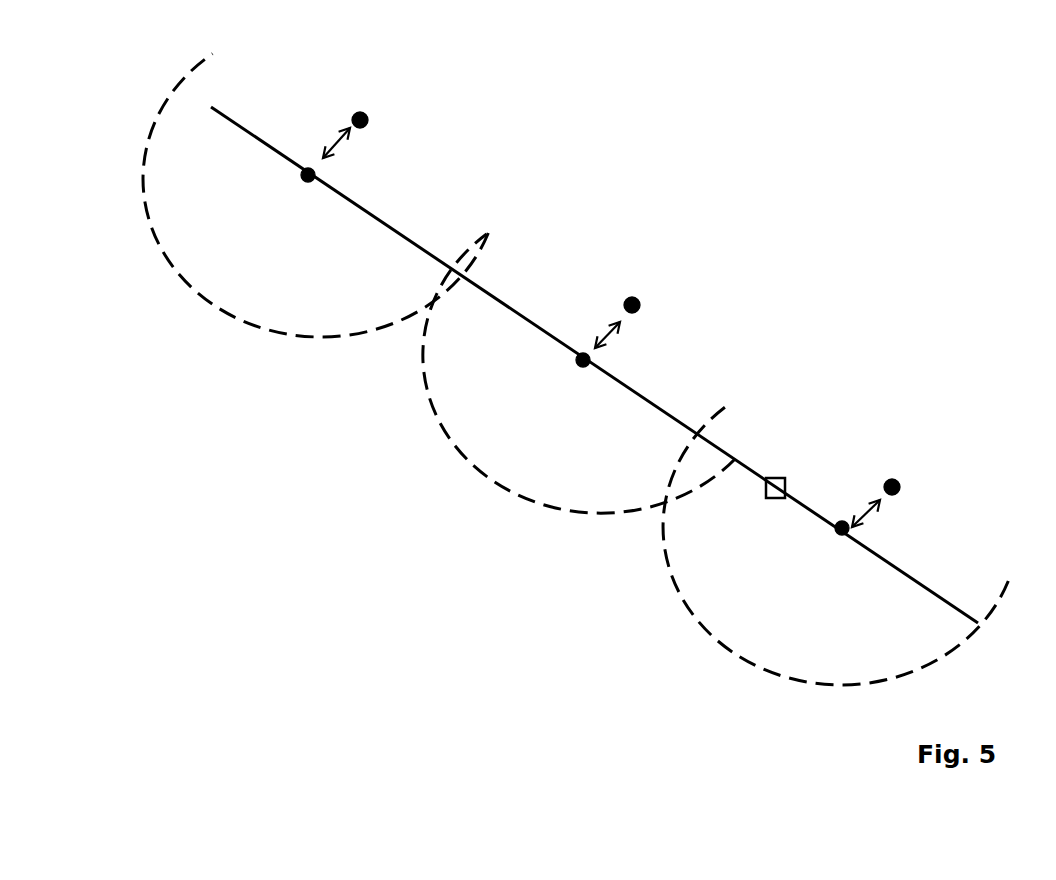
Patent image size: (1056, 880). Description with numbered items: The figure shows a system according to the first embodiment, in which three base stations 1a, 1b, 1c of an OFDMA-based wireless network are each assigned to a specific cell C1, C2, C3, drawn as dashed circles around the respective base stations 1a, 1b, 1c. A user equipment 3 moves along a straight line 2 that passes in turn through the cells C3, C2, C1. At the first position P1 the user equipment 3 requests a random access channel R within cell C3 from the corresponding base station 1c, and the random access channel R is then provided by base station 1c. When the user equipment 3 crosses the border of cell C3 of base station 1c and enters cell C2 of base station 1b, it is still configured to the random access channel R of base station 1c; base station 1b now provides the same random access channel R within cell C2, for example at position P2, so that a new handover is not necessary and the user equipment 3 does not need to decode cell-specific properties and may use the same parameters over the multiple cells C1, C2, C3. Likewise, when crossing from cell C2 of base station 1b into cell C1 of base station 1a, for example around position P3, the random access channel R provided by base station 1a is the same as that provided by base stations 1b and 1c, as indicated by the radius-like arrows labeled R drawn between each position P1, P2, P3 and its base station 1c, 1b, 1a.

The base station 1a is at (366, 114).
The base station 1b is at (639, 297).
The base station 1c is at (898, 478).
The line 2 is at (962, 608).
The user equipment 3 is at (782, 477).
The first position P1 is at (836, 534).
The position P2 is at (578, 366).
The position P3 is at (301, 182).
The cell C1 is at (200, 298).
The cell C2 is at (472, 477).
The cell C3 is at (743, 663).
The random access channel R is at (335, 143).